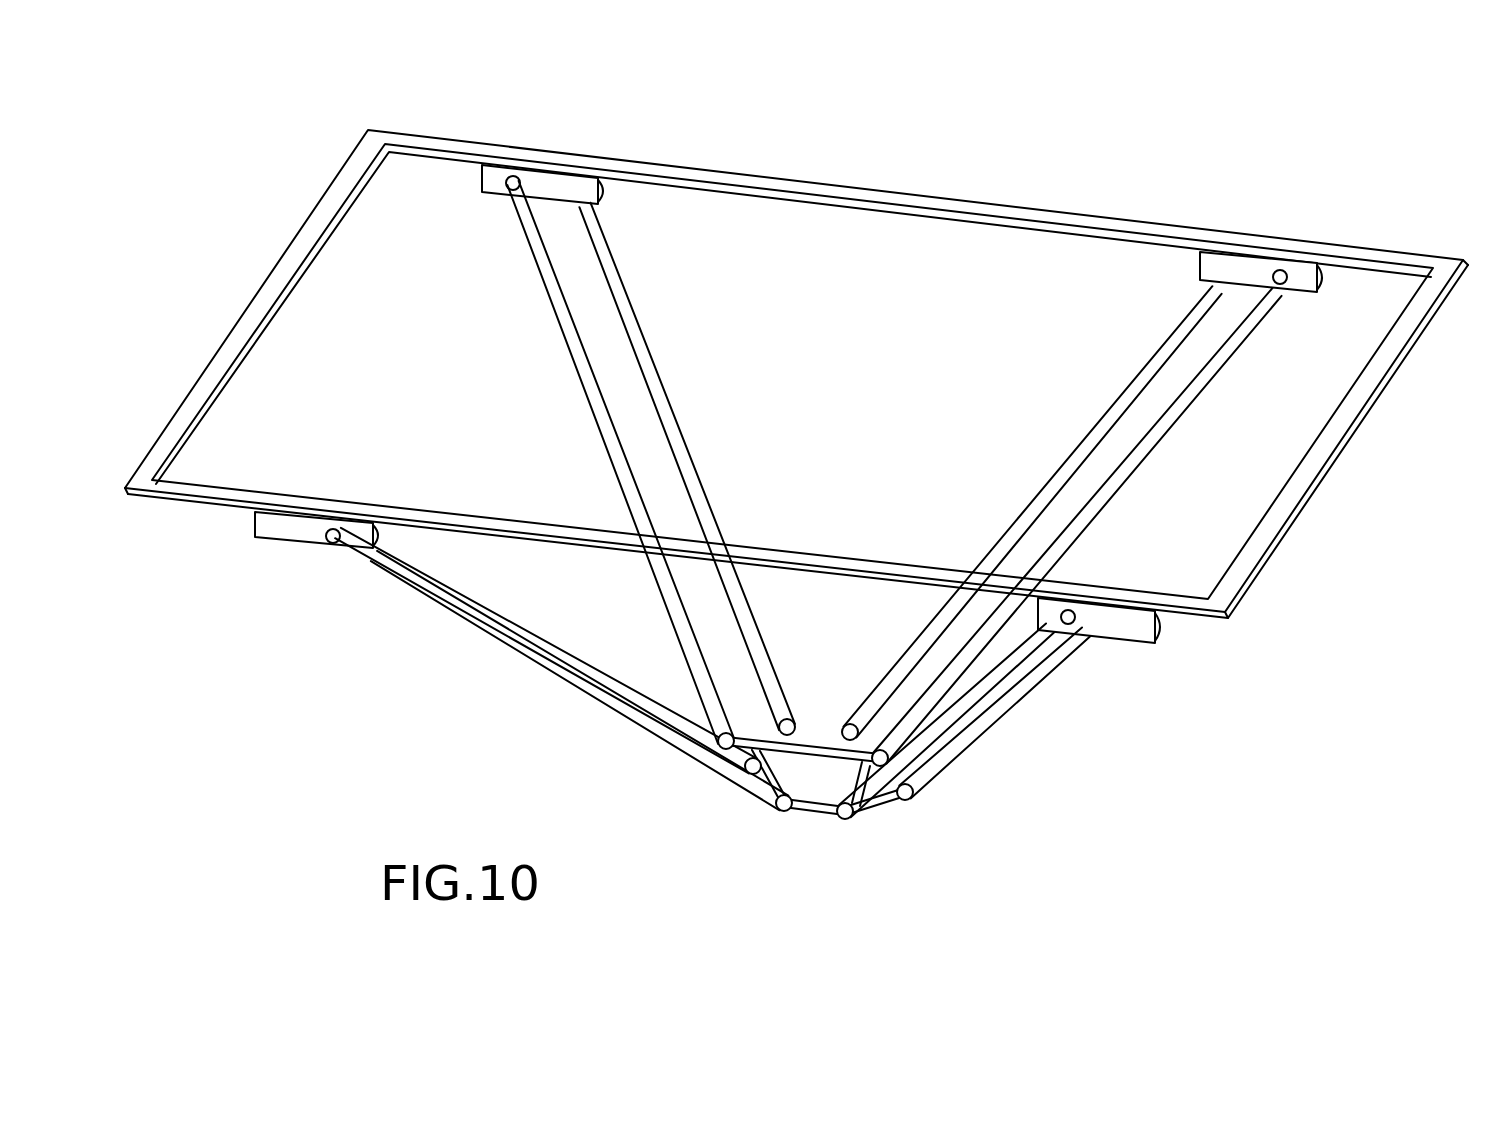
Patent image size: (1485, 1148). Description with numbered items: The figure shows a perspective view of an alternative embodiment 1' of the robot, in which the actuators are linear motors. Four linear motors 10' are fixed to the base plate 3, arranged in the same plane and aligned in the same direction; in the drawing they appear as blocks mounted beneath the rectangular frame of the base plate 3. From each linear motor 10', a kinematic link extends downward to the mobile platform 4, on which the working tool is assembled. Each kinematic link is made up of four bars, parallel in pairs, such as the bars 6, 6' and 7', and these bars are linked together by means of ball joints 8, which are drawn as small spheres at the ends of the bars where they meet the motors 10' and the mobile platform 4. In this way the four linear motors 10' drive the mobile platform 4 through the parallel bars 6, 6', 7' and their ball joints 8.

The alternative embodiment 1' is at (856, 118).
The base plate 3 is at (250, 303).
The mobile platform 4 is at (815, 842).
The bar 6 is at (578, 374).
The bar 6' is at (687, 466).
The bar 7' is at (899, 823).
The ball joint 8 is at (1284, 287).
The linear motor 10' is at (788, 397).